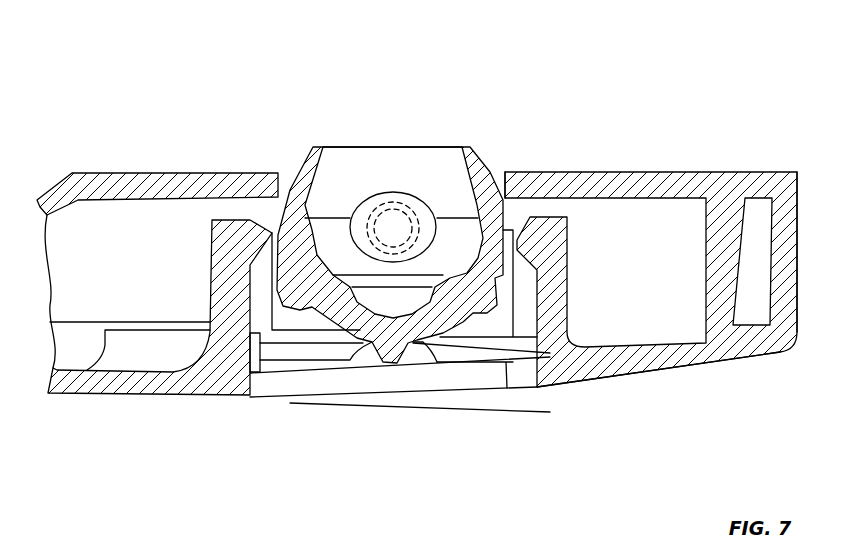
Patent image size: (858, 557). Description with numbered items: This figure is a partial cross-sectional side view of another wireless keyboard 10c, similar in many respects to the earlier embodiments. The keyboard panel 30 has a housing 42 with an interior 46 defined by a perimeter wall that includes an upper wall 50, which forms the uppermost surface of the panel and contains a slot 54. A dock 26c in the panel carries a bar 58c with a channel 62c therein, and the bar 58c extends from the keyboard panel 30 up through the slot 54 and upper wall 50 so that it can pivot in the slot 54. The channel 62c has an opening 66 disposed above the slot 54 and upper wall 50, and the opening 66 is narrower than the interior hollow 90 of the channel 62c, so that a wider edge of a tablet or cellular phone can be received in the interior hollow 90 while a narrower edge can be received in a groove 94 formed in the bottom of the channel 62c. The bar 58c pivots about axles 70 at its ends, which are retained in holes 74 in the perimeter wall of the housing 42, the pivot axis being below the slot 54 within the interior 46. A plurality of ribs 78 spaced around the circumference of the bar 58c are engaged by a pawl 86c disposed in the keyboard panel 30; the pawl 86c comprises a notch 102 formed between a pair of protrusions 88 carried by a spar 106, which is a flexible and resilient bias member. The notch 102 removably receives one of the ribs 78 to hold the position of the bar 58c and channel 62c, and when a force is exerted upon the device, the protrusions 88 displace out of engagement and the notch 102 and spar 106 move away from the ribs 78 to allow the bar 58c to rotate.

The wireless keyboard 10c is at (99, 136).
The dock 26c is at (515, 124).
The keyboard panel 30 is at (788, 258).
The housing 42 is at (638, 367).
The interior 46 is at (157, 323).
The upper wall 50 is at (662, 188).
The slot 54 is at (505, 172).
The bar 58c is at (291, 185).
The channel 62c is at (385, 175).
The opening 66 is at (415, 148).
The axles 70 is at (437, 228).
The holes 74 is at (443, 255).
The rib 78 is at (553, 347).
The pawl 86c is at (483, 368).
The protrusions 88 is at (317, 339).
The interior hollow 90 is at (327, 236).
The groove 94 is at (395, 305).
The notch 102 is at (381, 343).
The spar 106 is at (310, 377).